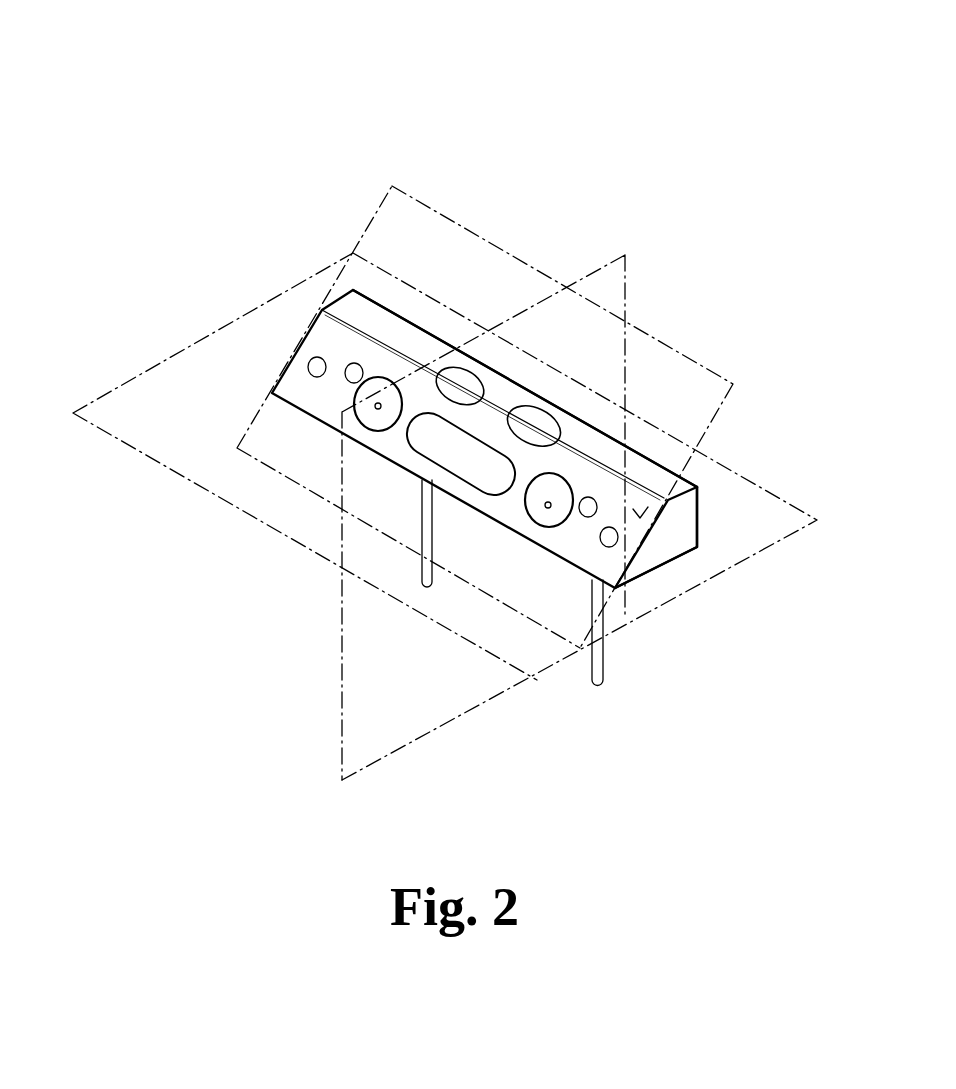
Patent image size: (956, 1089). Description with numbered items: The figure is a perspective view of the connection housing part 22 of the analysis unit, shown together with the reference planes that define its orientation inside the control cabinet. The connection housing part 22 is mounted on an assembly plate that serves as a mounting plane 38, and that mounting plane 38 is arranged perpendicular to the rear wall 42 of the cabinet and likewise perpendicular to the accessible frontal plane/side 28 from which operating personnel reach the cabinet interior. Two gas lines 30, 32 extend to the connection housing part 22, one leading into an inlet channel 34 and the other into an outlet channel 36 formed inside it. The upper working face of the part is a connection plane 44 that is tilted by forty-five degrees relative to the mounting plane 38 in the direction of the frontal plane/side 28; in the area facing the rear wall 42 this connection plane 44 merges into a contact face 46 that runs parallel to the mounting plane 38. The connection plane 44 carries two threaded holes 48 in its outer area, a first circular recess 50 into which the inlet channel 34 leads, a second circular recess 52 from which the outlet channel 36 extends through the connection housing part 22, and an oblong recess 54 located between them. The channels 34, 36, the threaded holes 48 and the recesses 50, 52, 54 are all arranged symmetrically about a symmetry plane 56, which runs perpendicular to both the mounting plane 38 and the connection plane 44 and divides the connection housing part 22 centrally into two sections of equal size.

The connection housing part 22 is at (541, 97).
The accessible frontal plane/side 28 is at (233, 464).
The gas line 30 is at (421, 530).
The gas line 32 is at (603, 662).
The inlet channel 34 is at (377, 408).
The outlet channel 36 is at (548, 508).
The mounting plane 38 is at (670, 572).
The rear wall 42 is at (662, 447).
The connection plane 44 is at (653, 506).
The contact face 46 is at (648, 476).
The threaded holes 48 is at (308, 366).
The first circular recess 50 is at (376, 374).
The second circular recess 52 is at (562, 487).
The oblong recess 54 is at (473, 450).
The symmetry plane 56 is at (627, 293).